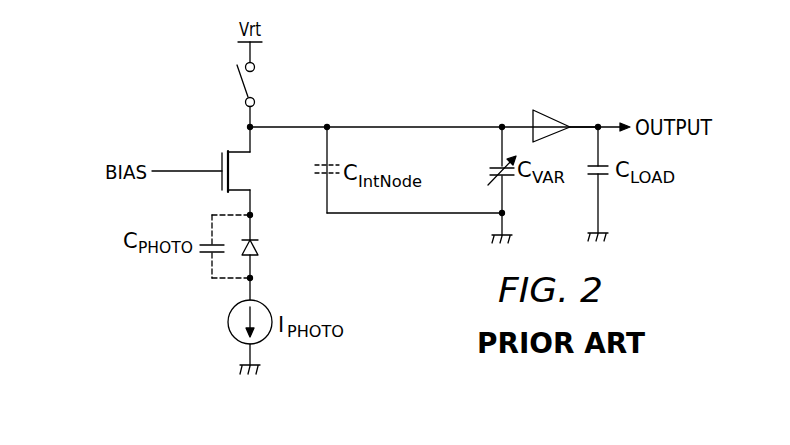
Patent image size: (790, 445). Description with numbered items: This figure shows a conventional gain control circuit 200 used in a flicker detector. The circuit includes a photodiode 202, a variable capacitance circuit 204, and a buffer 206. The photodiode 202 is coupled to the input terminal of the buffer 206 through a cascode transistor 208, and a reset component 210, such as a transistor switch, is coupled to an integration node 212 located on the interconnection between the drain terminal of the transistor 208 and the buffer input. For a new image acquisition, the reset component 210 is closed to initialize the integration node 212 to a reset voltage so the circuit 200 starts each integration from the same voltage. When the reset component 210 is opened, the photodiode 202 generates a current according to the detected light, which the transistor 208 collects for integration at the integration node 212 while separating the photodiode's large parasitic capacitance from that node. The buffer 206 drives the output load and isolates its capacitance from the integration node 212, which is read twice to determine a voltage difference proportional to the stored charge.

The gain control circuit 200 is at (455, 74).
The photodiode 202 is at (258, 243).
The variable capacitance circuit 204 is at (490, 170).
The buffer 206 is at (550, 113).
The cascode transistor 208 is at (219, 158).
The reset component 210 is at (242, 83).
The integration node 212 is at (320, 133).